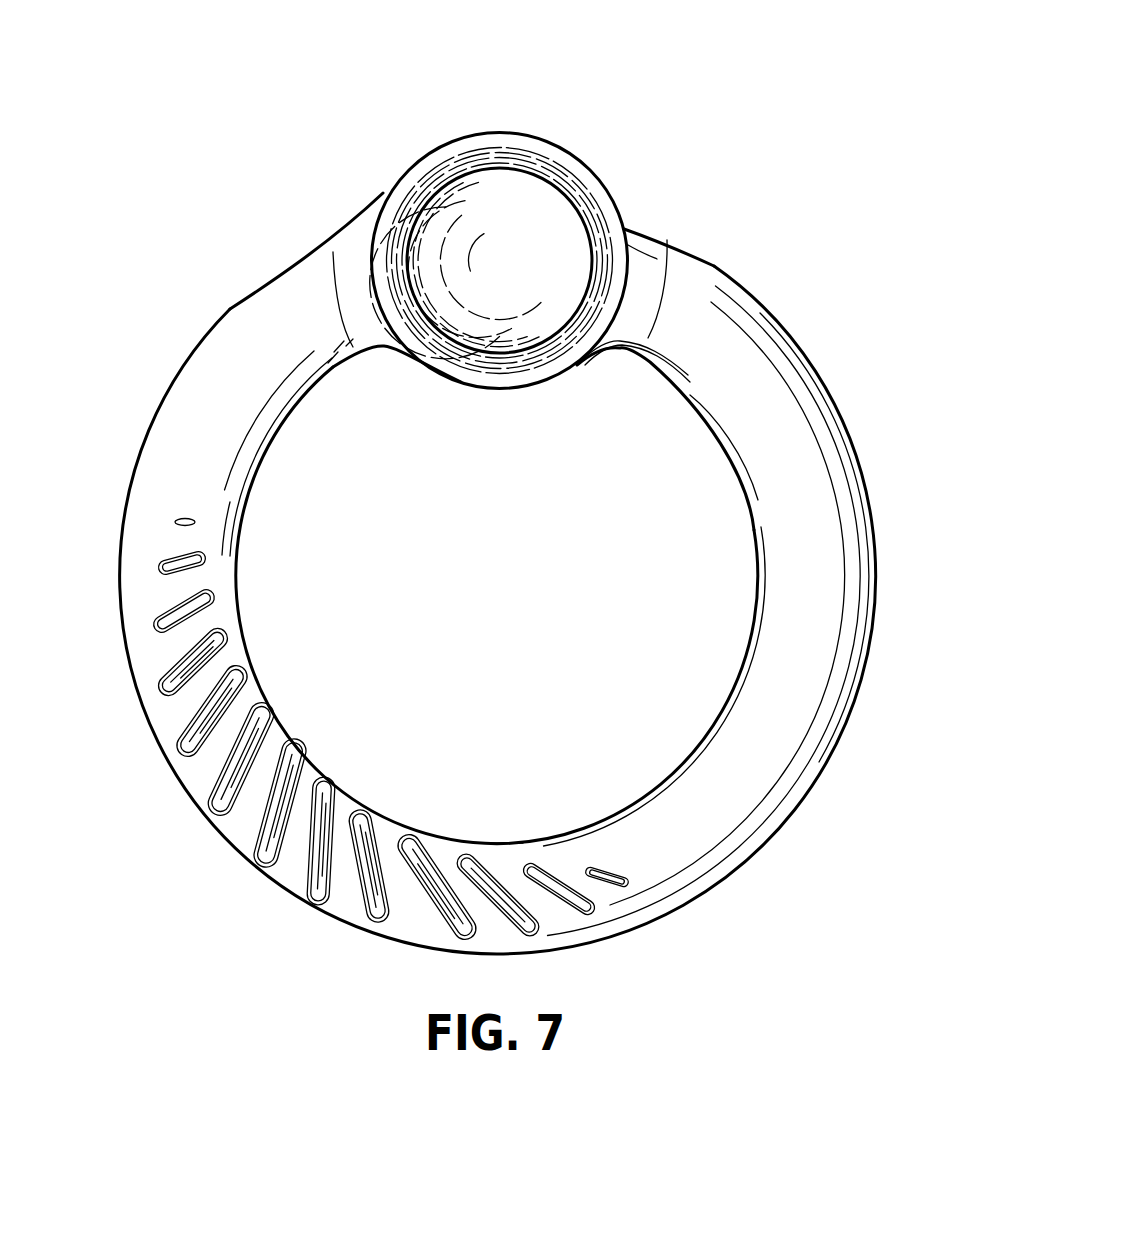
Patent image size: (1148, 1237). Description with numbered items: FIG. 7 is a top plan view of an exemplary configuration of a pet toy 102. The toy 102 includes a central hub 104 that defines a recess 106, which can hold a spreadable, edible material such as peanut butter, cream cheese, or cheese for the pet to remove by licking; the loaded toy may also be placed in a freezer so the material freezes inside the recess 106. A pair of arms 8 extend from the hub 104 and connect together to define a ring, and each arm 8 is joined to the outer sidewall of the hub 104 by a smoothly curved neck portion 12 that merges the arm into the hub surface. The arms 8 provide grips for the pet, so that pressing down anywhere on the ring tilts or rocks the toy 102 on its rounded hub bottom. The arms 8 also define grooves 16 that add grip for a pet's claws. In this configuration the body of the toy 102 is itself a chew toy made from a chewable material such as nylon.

The arm 8 is at (273, 340).
The neck portion 12 is at (387, 344).
The groove 16 is at (325, 845).
The pet toy 102 is at (695, 88).
The hub 104 is at (523, 133).
The recess 106 is at (553, 185).